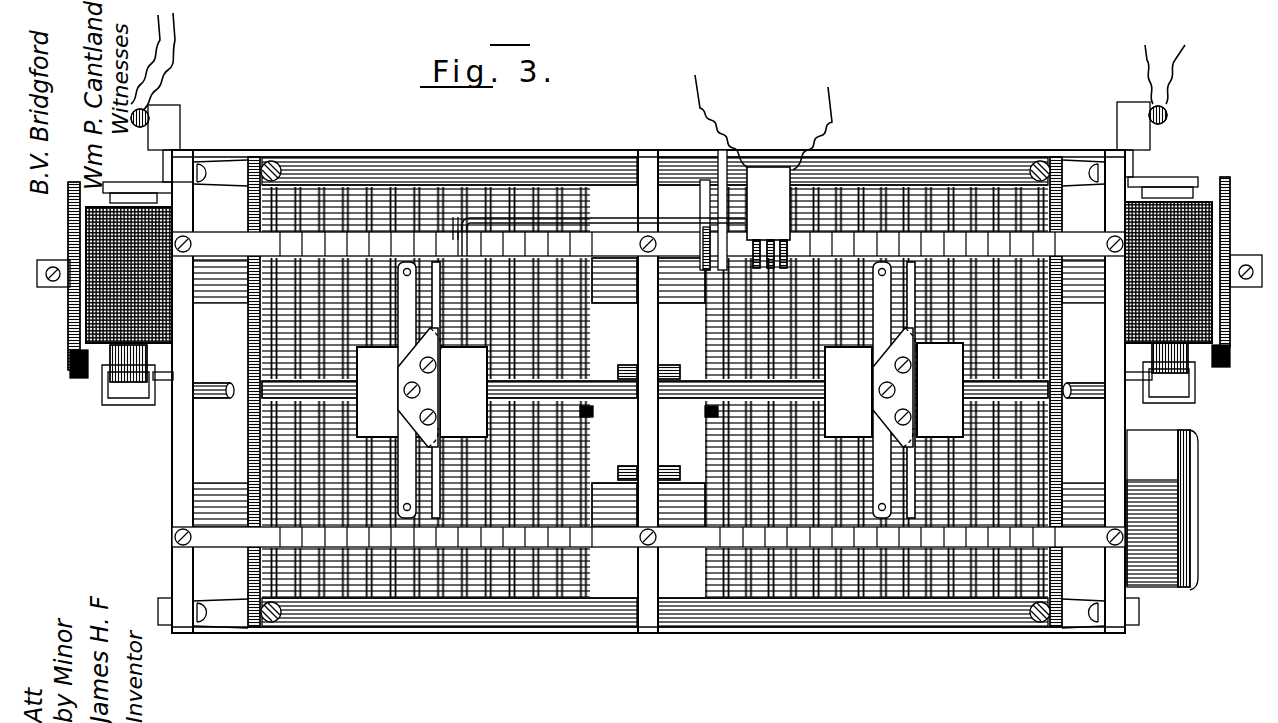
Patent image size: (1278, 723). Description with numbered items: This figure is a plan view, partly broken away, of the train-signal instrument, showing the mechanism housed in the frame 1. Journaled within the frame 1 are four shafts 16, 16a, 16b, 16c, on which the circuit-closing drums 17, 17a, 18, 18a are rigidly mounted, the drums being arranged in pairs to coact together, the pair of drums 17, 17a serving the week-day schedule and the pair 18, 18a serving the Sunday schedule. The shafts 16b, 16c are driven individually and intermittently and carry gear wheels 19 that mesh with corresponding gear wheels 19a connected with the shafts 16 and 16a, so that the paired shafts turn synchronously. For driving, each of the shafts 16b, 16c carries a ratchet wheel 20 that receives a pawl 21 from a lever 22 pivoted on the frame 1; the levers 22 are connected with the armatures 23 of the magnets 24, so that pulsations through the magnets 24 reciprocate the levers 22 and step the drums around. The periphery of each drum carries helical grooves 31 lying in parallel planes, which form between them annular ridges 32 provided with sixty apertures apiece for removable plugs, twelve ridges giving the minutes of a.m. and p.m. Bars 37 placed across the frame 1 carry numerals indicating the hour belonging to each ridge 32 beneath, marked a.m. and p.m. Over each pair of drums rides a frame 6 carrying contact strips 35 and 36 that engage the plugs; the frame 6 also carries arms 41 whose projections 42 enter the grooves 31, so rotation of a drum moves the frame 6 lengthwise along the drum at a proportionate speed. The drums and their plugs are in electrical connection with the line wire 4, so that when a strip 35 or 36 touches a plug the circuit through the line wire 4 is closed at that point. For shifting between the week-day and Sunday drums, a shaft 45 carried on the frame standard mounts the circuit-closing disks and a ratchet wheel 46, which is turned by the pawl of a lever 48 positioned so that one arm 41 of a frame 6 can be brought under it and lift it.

The frame 1 is at (426, 633).
The line wire 4 is at (658, 91).
The frame 6 is at (656, 392).
The shaft 16 is at (617, 460).
The shaft 16a is at (684, 468).
The shaft 16b is at (614, 300).
The shaft 16c is at (681, 300).
The drum 17 is at (614, 532).
The drum 17a is at (616, 365).
The drum 18 is at (681, 506).
The drum 18a is at (682, 367).
The gear wheel 19 is at (249, 350).
The gear wheel 19a is at (250, 452).
The ratchet wheel 20 is at (68, 215).
The pawl 21 is at (70, 327).
The lever 22 is at (90, 385).
The armature 23 is at (129, 398).
The magnet 24 is at (168, 328).
The groove 31 is at (712, 404).
The annular ridge 32 is at (590, 413).
The contact 35 is at (928, 426).
The contact 36 is at (660, 390).
The bar 37 is at (1078, 233).
The arm 41 is at (398, 292).
The projection 42 is at (407, 268).
The shaft 45 is at (723, 188).
The ratchet wheel 46 is at (708, 240).
The lever 48 is at (712, 205).